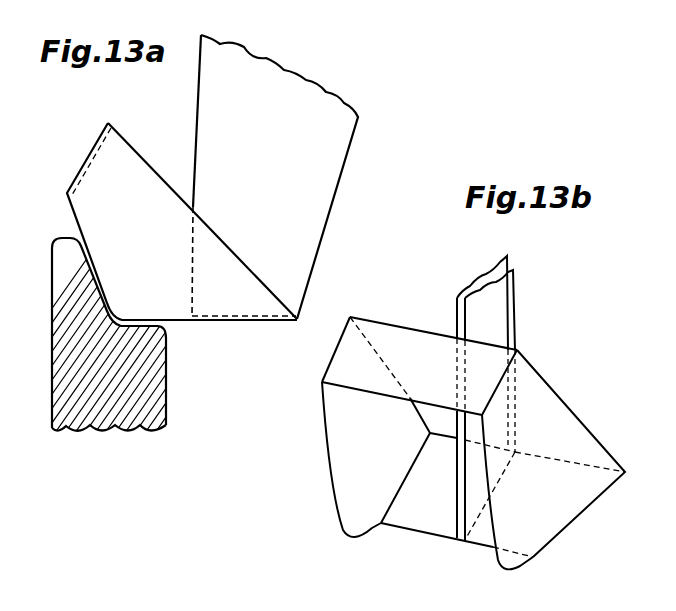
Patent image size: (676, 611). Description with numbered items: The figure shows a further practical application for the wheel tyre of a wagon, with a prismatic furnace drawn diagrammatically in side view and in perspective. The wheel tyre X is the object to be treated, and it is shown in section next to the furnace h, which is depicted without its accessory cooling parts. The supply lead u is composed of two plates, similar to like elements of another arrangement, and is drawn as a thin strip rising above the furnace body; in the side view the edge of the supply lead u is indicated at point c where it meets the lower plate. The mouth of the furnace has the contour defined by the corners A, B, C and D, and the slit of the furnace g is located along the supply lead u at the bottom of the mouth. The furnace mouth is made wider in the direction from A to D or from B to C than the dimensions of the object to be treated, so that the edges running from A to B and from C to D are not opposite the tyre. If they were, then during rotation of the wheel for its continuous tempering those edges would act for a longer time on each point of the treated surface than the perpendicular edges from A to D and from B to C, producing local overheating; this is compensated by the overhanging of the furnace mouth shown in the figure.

In FIG. 13A, the supply lead u is at (226, 78).
In FIG. 13B, the supply lead u is at (456, 297).
In FIG. 13A, the corner B of the furnace mouth contour B is at (170, 221).
In FIG. 13B, the corner B of the furnace mouth contour B is at (545, 459).
In FIG. 13A, the point c is at (189, 330).
In FIG. 13A, the wheel tyre X is at (80, 357).
In FIG. 13B, the corner A of the furnace mouth contour A is at (406, 427).
In FIG. 13B, the corner D of the furnace mouth contour D is at (448, 495).
In FIG. 13B, the corner C of the furnace mouth contour C is at (543, 566).
In FIG. 13B, the furnace h is at (549, 406).
In FIG. 13B, the slit of the furnace g is at (458, 538).